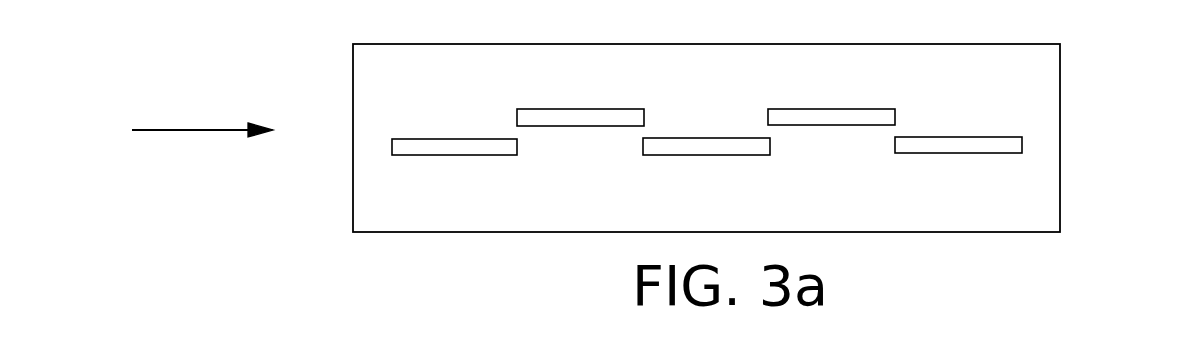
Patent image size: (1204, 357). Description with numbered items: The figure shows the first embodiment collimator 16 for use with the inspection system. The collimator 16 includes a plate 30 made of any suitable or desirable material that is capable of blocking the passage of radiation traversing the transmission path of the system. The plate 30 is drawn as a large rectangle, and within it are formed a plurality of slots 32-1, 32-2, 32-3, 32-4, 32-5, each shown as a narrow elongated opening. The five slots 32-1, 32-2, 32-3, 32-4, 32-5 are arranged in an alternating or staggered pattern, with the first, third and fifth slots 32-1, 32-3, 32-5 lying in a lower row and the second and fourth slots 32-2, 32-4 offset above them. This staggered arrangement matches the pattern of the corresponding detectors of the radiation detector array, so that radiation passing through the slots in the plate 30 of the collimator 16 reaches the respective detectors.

The first embodiment collimator 16 is at (185, 131).
The plate 30 is at (1060, 105).
The slot 32-1 is at (485, 155).
The slot 32-2 is at (618, 109).
The slot 32-3 is at (737, 155).
The slot 32-4 is at (858, 109).
The slot 32-5 is at (973, 155).